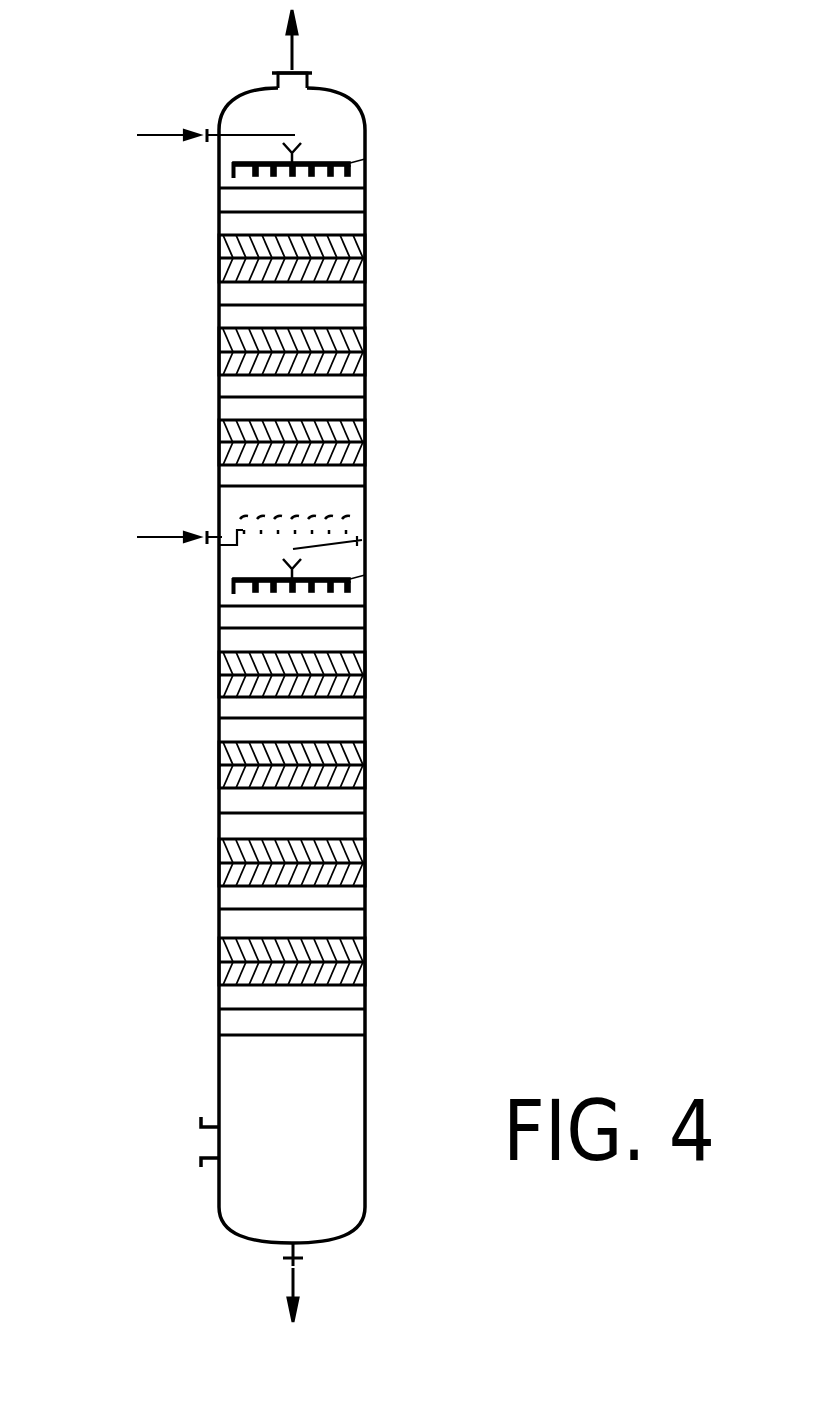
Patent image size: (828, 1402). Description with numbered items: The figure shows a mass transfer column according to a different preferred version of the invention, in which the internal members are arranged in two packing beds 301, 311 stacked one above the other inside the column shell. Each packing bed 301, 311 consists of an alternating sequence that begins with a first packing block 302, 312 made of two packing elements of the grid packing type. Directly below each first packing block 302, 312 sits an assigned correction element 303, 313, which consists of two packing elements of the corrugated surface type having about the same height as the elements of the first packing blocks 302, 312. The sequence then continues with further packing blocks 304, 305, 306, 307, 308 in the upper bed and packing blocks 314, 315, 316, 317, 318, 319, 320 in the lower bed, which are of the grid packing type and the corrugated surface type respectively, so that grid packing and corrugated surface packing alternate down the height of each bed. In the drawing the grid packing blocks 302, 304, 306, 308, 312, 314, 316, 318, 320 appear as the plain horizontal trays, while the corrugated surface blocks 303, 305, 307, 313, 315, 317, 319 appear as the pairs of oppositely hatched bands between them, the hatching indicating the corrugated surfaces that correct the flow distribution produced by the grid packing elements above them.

The packing bed 301 is at (408, 355).
The first packing block 302 is at (212, 209).
The correction element 303 is at (212, 255).
The packing block 304 is at (212, 301).
The packing block 305 is at (212, 349).
The packing block 306 is at (212, 395).
The packing block 307 is at (212, 439).
The packing block 308 is at (212, 481).
The packing bed 311 is at (408, 797).
The first packing block 312 is at (212, 627).
The correction element 313 is at (212, 673).
The packing block 314 is at (212, 717).
The packing block 315 is at (212, 764).
The packing block 316 is at (212, 811).
The packing block 317 is at (212, 860).
The packing block 318 is at (212, 908).
The packing block 319 is at (212, 960).
The packing block 320 is at (212, 1008).